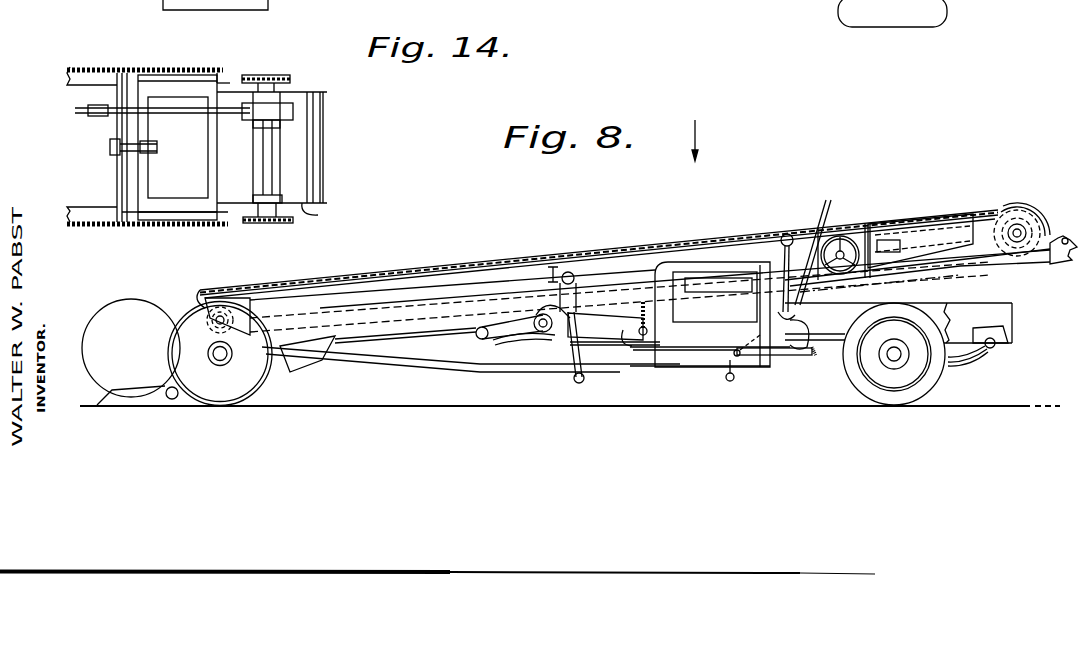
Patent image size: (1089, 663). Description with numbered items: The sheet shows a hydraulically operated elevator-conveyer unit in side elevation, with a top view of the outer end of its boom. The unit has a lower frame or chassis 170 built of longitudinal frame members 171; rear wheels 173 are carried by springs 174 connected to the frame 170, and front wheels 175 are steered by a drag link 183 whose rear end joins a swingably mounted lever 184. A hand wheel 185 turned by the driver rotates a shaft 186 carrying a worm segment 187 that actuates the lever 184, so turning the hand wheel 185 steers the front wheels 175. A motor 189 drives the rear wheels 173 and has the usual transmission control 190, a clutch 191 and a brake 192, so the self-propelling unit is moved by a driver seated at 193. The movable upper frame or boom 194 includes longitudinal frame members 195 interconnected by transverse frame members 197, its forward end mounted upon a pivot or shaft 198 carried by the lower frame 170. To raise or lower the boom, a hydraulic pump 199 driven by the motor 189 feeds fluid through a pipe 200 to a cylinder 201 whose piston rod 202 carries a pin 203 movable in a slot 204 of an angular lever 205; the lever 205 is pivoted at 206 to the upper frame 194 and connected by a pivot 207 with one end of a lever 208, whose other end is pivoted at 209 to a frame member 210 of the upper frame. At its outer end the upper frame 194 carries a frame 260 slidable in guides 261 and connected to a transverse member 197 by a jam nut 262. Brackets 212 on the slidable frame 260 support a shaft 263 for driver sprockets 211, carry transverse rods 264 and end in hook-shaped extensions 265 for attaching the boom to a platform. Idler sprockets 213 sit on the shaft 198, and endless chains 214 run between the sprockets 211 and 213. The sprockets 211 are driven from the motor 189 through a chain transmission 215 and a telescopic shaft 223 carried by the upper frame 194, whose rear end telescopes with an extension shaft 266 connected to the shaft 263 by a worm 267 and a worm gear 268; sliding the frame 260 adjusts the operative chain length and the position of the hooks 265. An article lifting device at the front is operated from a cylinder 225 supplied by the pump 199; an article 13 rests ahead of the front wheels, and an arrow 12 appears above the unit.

In FIG. 8, the direction arrow 12 is at (698, 132).
In FIG. 8, the ball 13 is at (112, 315).
In FIG. 8, the lower frame or chassis 170 is at (1002, 302).
In FIG. 8, the longitudinal frame members 171 is at (1000, 318).
In FIG. 8, the rear wheels 173 is at (928, 386).
In FIG. 8, the springs 174 is at (975, 360).
In FIG. 8, the front wheels 175 is at (241, 392).
In FIG. 8, the drag link 183 is at (369, 360).
In FIG. 8, the swingable mounted lever 184 is at (728, 370).
In FIG. 8, the hand wheel 185 is at (847, 232).
In FIG. 8, the shaft 186 is at (893, 292).
In FIG. 8, the worm segment 187 is at (742, 360).
In FIG. 8, the motor 189 is at (695, 350).
In FIG. 8, the transmission control 190 is at (780, 232).
In FIG. 8, the clutch 191 is at (804, 350).
In FIG. 8, the brake 192 is at (816, 250).
In FIG. 8, the driver seat 193 is at (940, 272).
In FIG. 8, the upper frame or boom 194 is at (467, 278).
In FIG. 14, the longitudinal frame members 195 is at (129, 227).
In FIG. 14, the transverse frame members 197 is at (120, 128).
In FIG. 8, the pivot or shaft 198 is at (232, 292).
In FIG. 8, the hydraulic pump 199 is at (660, 355).
In FIG. 8, the fluid-transmitting pipe 200 is at (630, 350).
In FIG. 8, the cylinder 201 is at (604, 325).
In FIG. 8, the piston rod 202 is at (572, 348).
In FIG. 8, the pin 203 is at (545, 350).
In FIG. 8, the slot 204 is at (500, 352).
In FIG. 8, the angular lever 205 is at (515, 315).
In FIG. 8, the pivot 206 is at (476, 340).
In FIG. 8, the pivot 207 is at (575, 386).
In FIG. 8, the lever 208 is at (578, 314).
In FIG. 8, the pivot 209 is at (572, 270).
In FIG. 8, the frame member 210 is at (556, 265).
In FIG. 8, the driver sprockets 211 is at (1027, 227).
In FIG. 14, the brackets 212 is at (297, 215).
In FIG. 8, the brackets 212 is at (1050, 242).
In FIG. 8, the idler sprockets 213 is at (210, 297).
In FIG. 8, the endless chains 214 is at (1000, 208).
In FIG. 8, the chain transmission 215 is at (820, 380).
In FIG. 8, the telescopic shaft 223 is at (922, 225).
In FIG. 8, the cylinder 225 is at (290, 370).
In FIG. 14, the slidable frame 260 is at (185, 88).
In FIG. 8, the slidable frame 260 is at (957, 210).
In FIG. 14, the guides 261 is at (132, 78).
In FIG. 14, the jam nut 262 is at (132, 155).
In FIG. 14, the shaft 263 is at (268, 155).
In FIG. 8, the shaft 263 is at (1020, 229).
In FIG. 14, the transverse rods 264 is at (318, 175).
In FIG. 8, the hook-shaped extensions 265 is at (1068, 262).
In FIG. 14, the extension shaft 266 is at (182, 113).
In FIG. 14, the worm 267 is at (288, 110).
In FIG. 14, the worm gear 268 is at (296, 125).